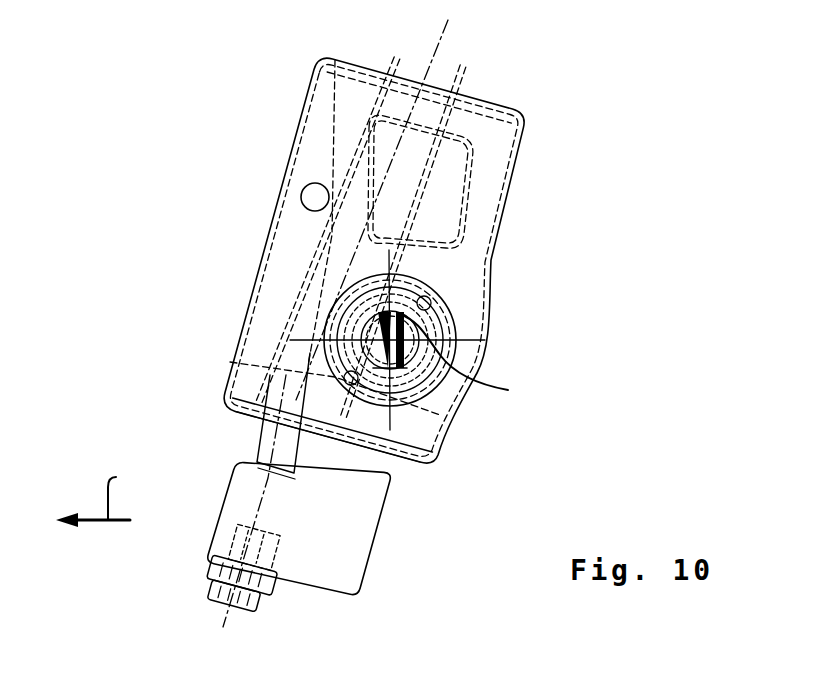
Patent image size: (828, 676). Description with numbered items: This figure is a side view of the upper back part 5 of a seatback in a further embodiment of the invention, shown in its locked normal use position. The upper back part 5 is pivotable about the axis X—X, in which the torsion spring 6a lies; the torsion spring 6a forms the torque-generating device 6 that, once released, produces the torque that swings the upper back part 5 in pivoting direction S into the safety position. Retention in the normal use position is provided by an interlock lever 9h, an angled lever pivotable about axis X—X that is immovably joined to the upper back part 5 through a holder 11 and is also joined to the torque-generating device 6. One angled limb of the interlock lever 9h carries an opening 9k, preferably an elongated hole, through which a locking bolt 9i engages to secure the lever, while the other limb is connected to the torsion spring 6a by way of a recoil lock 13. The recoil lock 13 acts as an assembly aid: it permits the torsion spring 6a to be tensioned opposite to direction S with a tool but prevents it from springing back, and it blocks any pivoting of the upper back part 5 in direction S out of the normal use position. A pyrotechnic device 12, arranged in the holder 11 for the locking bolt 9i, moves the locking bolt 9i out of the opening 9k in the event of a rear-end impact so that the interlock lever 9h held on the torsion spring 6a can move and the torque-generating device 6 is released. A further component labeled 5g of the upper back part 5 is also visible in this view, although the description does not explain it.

The upper back part 5 is at (150, 294).
The hinge plate 5g is at (486, 118).
The interlock lever 9h is at (487, 153).
The recoil lock 13 is at (458, 302).
The torsion spring 6a is at (465, 340).
The torque-generating device 6 is at (420, 333).
The locking bolt 9i is at (268, 441).
The opening 9k is at (320, 430).
The holder 11 is at (373, 495).
The pyrotechnic device 12 is at (212, 572).